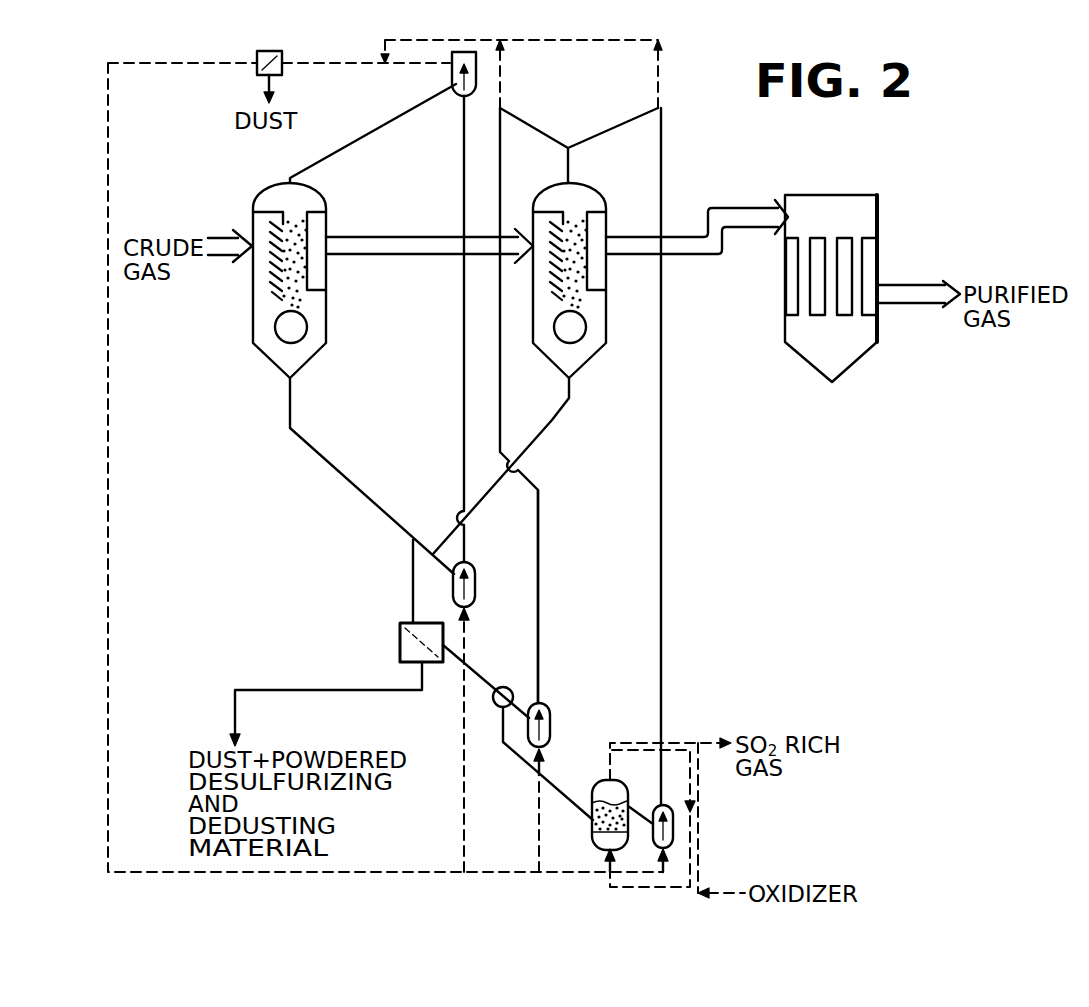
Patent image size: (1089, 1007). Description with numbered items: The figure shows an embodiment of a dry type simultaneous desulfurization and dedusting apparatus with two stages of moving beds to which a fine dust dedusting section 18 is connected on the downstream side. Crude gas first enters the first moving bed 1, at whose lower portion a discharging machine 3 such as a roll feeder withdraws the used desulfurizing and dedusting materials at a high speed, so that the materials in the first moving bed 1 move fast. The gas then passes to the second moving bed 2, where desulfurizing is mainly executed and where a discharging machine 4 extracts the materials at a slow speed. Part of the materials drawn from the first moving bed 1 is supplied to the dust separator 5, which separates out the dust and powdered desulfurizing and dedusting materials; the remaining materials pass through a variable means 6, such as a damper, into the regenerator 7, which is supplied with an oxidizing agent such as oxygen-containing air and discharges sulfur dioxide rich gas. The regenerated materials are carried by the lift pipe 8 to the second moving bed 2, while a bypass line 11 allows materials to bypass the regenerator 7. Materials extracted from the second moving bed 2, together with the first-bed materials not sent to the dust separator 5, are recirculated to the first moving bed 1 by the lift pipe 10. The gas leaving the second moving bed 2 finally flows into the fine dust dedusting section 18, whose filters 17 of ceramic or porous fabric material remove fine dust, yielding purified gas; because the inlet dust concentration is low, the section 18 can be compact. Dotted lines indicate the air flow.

The first moving bed 1 is at (303, 236).
The second moving bed 2 is at (583, 238).
The discharging machine 3 is at (299, 341).
The discharging machine 4 is at (578, 341).
The dust separator 5 is at (400, 642).
The variable means 6 is at (503, 687).
The regenerator 7 is at (597, 779).
The lift pipe 8 is at (665, 495).
The lift pipe 10 is at (463, 431).
The bypass line 11 is at (541, 563).
The filters 17 is at (821, 238).
The fine dust dedusting section 18 is at (872, 268).